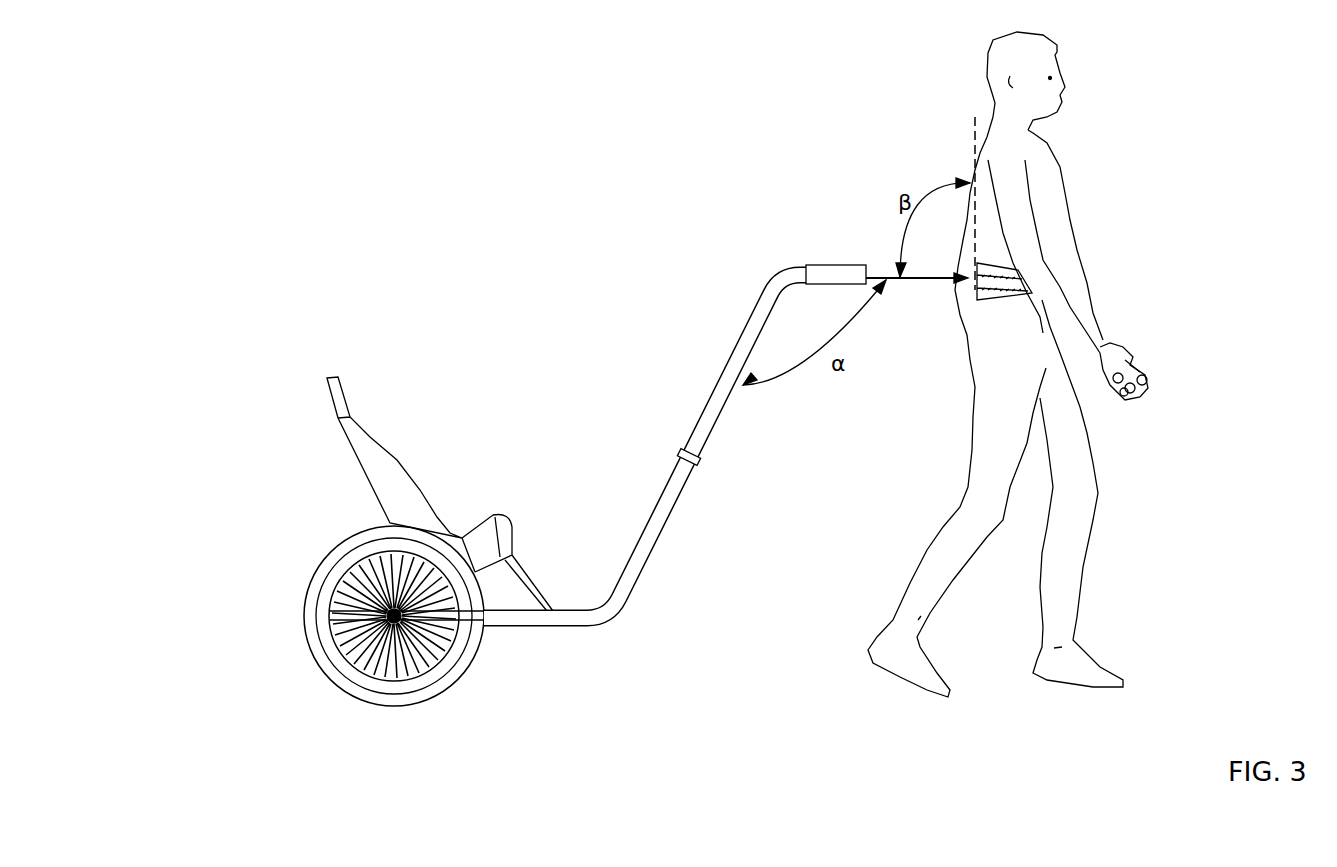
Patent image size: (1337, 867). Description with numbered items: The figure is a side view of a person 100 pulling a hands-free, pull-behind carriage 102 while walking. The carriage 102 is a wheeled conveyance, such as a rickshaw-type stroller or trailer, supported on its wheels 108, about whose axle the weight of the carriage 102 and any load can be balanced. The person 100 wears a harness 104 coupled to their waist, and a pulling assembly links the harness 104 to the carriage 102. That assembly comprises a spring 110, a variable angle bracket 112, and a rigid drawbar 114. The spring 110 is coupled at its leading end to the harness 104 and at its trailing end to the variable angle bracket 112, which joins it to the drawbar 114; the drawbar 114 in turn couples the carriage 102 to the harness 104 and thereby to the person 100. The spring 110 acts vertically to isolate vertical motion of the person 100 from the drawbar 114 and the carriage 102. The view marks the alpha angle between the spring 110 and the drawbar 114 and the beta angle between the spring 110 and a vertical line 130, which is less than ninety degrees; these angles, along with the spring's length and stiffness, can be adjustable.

The person 100 is at (1112, 143).
The carriage 102 is at (313, 347).
The harness 104 is at (1018, 318).
The wheels 108 is at (385, 689).
The spring 110 is at (873, 275).
The variable angle bracket 112 is at (827, 270).
The drawbar 114 is at (650, 405).
The vertical line 130 is at (975, 135).